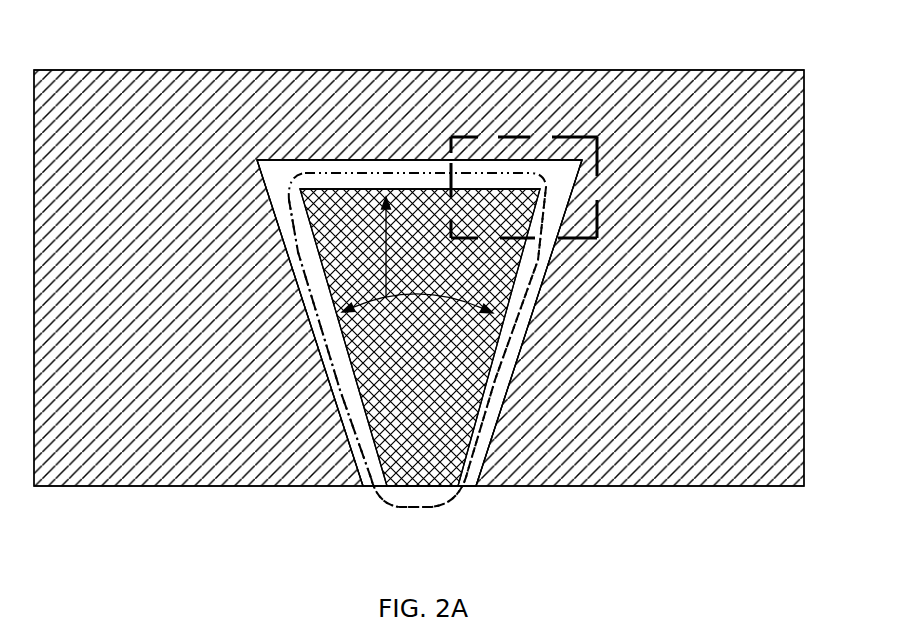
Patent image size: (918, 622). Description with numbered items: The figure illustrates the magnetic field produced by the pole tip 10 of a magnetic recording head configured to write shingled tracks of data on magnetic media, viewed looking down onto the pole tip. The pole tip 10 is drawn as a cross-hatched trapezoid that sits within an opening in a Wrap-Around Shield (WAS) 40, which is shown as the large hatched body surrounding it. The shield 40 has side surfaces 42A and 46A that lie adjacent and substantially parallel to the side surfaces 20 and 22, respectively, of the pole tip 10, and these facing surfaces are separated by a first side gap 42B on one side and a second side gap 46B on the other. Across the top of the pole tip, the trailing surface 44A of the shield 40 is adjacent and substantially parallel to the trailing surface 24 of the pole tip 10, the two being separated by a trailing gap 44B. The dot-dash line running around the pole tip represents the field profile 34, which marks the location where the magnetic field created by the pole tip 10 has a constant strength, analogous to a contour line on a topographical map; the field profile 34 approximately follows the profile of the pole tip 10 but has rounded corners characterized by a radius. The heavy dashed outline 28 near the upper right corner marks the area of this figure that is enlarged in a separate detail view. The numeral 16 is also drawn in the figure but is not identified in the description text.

The pole tip 10 is at (430, 522).
The bottom portion 16 is at (375, 462).
The side surface 20 is at (480, 398).
The side surface 22 is at (352, 395).
The trailing surface 24 is at (320, 200).
The dashed outline 28 is at (508, 137).
The field profile 34 is at (462, 485).
The wrap-around shield 40 is at (146, 126).
The side surface 42A is at (544, 280).
The first side gap 42B is at (542, 332).
The trailing surface 44A is at (337, 160).
The trailing gap 44B is at (386, 150).
The side surface 46A is at (296, 283).
The second side gap 46B is at (298, 328).